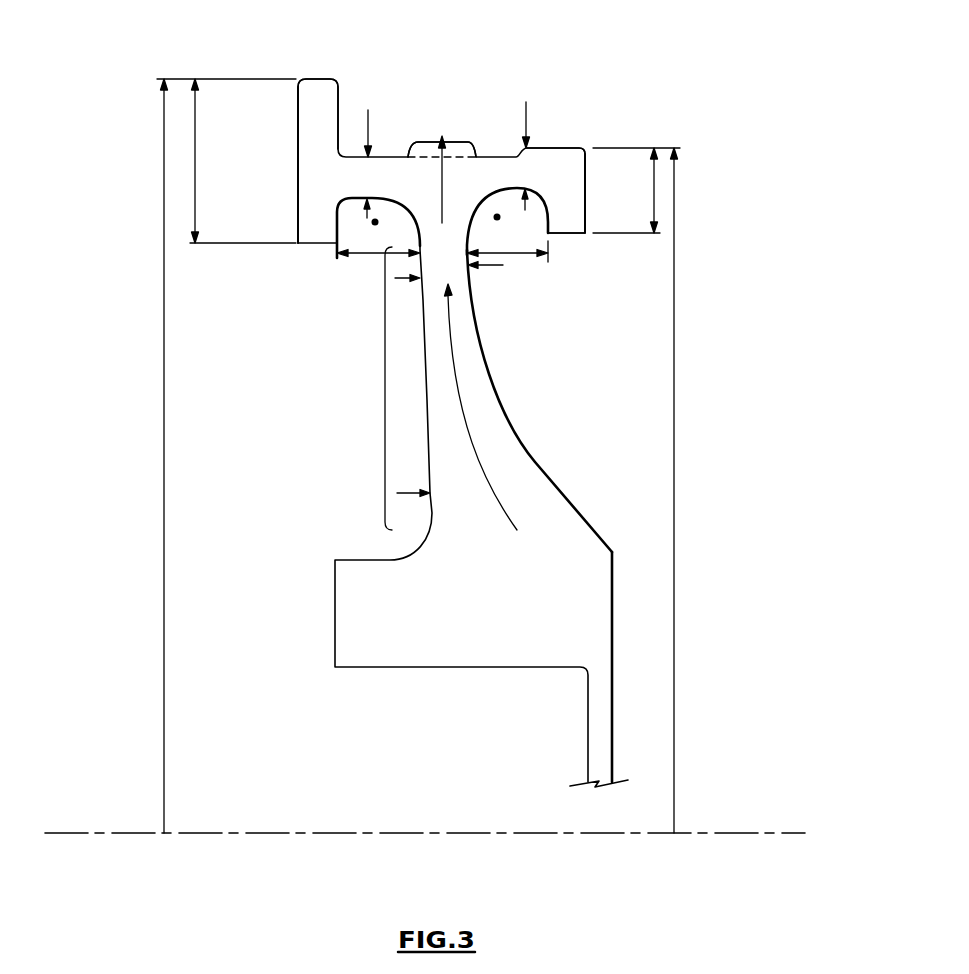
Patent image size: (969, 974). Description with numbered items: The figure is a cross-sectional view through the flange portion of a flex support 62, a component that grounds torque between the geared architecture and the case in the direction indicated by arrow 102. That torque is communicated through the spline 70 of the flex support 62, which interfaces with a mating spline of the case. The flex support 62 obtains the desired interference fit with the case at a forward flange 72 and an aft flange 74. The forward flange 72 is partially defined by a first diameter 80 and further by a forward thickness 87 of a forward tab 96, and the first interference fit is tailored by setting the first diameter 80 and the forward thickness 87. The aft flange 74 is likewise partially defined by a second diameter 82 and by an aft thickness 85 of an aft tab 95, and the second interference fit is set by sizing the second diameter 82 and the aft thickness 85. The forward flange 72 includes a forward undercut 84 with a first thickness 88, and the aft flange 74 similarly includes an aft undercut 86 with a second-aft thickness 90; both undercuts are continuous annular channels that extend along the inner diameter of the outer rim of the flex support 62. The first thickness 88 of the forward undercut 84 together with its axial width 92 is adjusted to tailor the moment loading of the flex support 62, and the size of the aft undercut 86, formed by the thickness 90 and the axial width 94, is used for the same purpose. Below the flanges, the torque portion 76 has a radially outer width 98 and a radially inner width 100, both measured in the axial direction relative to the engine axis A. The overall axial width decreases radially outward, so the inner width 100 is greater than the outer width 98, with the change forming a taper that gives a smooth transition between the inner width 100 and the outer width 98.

The flex support 62 is at (767, 170).
The spline 70 is at (472, 120).
The forward flange 72 is at (339, 71).
The aft flange 74 is at (592, 127).
The torque portion 76 is at (385, 381).
The first diameter 80 is at (164, 432).
The second diameter 82 is at (674, 348).
The forward undercut 84 is at (375, 222).
The aft thickness 85 is at (650, 189).
The aft undercut 86 is at (497, 217).
The forward thickness 87 is at (198, 168).
The first thickness 88 is at (370, 115).
The second-aft thickness 90 is at (529, 108).
The axial width 92 is at (361, 256).
The axial width 94 is at (517, 259).
The aft tab 95 is at (558, 175).
The forward tab 96 is at (310, 112).
The radially outer width 98 is at (494, 265).
The radially inner width 100 is at (374, 176).
The arrow 102 is at (458, 391).
The engine axis A is at (740, 833).